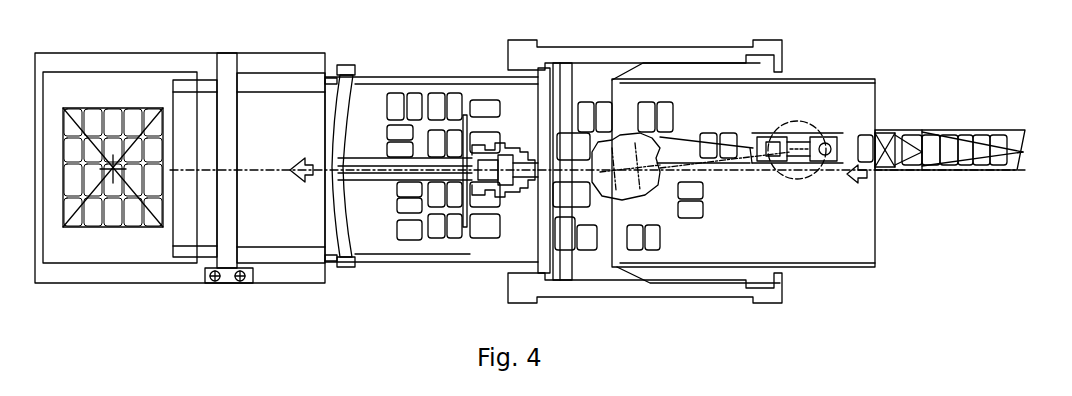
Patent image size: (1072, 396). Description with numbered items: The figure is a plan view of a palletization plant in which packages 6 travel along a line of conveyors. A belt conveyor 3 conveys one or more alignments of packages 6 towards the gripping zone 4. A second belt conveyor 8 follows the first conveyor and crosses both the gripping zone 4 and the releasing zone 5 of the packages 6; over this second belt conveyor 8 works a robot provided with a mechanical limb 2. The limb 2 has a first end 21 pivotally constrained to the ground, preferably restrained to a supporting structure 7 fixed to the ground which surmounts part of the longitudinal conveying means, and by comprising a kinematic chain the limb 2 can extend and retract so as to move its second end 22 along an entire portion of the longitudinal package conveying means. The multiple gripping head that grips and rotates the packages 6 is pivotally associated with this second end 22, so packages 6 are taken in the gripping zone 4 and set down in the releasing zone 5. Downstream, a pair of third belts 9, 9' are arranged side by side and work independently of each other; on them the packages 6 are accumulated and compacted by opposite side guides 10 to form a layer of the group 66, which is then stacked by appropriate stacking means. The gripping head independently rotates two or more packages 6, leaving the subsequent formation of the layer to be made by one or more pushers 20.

The limb 2 is at (682, 170).
The belt conveyor 3 is at (1007, 133).
The gripping zone 4 is at (843, 114).
The releasing zone 5 is at (694, 108).
The packages 6 is at (885, 155).
The supporting structure 7 is at (588, 65).
The second belt conveyor 8 is at (845, 247).
The third belt 9 is at (431, 200).
The third belt 9' is at (524, 140).
The side guides 10 is at (366, 85).
The pusher 20 is at (437, 168).
The first end 21 is at (605, 182).
The second end 22 is at (800, 140).
The group 66 is at (87, 98).